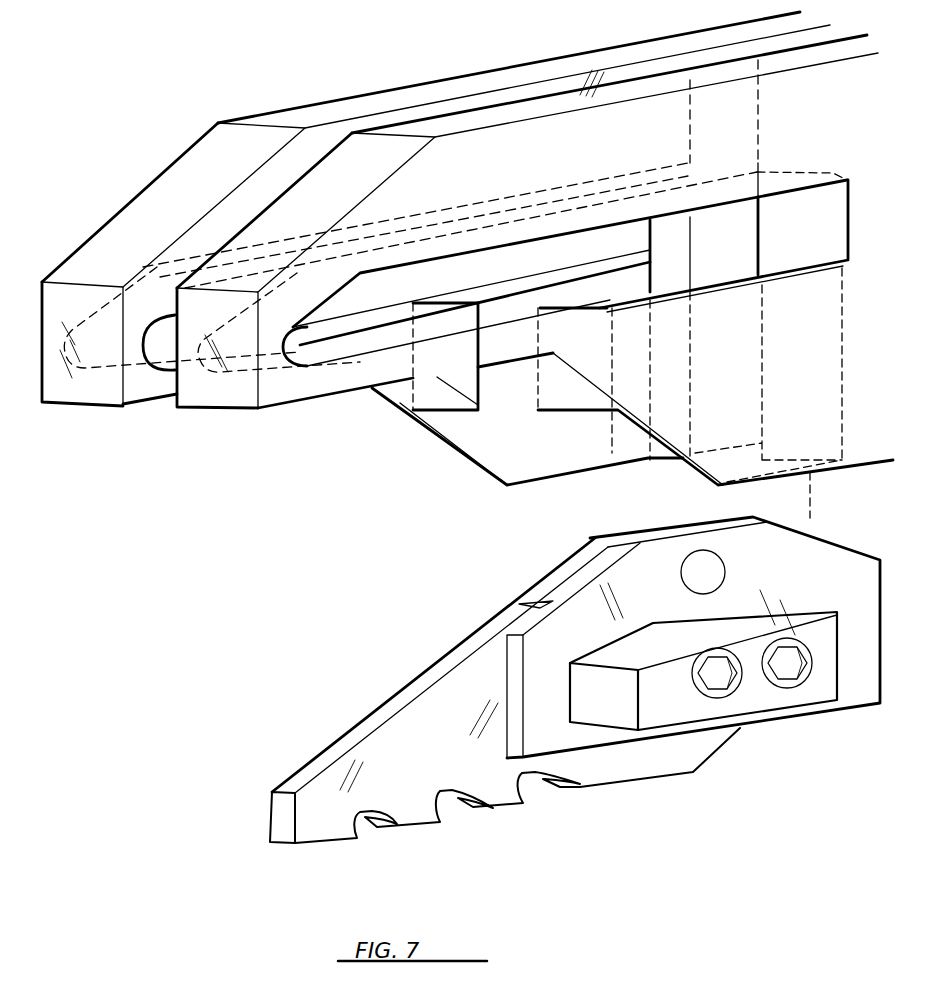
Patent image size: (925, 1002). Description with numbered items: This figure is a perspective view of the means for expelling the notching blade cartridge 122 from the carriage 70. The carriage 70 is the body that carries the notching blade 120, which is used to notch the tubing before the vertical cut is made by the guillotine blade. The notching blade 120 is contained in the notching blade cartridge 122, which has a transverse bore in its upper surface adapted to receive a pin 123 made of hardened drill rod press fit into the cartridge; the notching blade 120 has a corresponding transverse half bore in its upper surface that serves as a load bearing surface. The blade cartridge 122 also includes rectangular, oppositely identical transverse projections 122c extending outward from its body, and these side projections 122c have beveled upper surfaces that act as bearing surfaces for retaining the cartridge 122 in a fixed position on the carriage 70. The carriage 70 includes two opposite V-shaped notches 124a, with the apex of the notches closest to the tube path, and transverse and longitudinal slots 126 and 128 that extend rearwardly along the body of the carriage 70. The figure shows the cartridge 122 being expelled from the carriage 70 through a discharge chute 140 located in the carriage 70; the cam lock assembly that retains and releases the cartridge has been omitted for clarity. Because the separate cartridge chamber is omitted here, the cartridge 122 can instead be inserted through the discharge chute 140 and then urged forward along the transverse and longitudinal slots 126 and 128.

The carriage 70 is at (180, 203).
The longitudinal slot 128 is at (333, 133).
The transverse slot 126 is at (790, 218).
The V-shaped notch 124a is at (305, 367).
The discharge chute 140 is at (542, 443).
The notching blade cartridge 122 is at (785, 537).
The pin 123 is at (700, 584).
The transverse projection 122c is at (682, 703).
The notching blade 120 is at (350, 745).